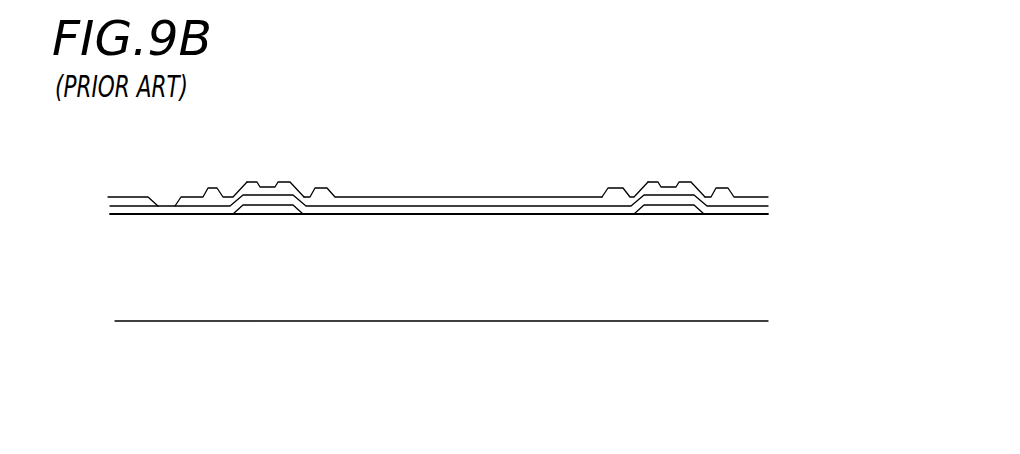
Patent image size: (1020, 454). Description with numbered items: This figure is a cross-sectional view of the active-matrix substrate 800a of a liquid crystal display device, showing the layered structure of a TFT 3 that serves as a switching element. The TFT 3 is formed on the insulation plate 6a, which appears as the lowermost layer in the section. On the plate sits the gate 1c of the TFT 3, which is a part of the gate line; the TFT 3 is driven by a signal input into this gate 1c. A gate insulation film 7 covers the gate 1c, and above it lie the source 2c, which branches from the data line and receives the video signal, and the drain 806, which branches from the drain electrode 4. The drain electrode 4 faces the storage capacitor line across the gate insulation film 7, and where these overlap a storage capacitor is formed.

The active-matrix substrate 800a is at (654, 111).
The gate insulation film 7 is at (108, 213).
The source 2c is at (188, 190).
The TFT 3 is at (267, 187).
The drain electrode 4 is at (443, 198).
The insulation plate 6a is at (228, 295).
The gate 1c is at (268, 212).
The drain 806 is at (315, 200).